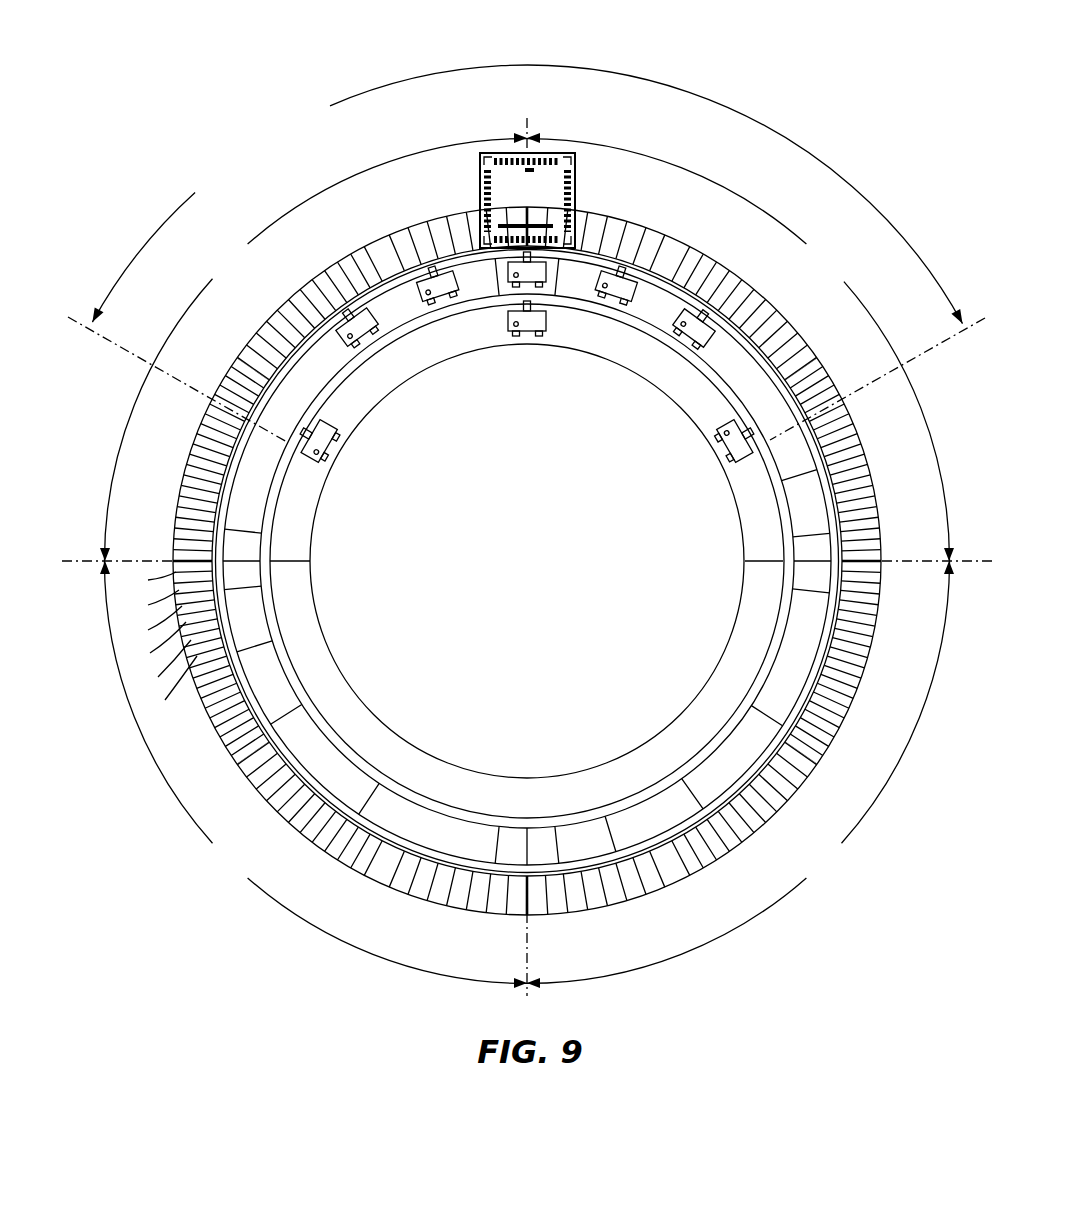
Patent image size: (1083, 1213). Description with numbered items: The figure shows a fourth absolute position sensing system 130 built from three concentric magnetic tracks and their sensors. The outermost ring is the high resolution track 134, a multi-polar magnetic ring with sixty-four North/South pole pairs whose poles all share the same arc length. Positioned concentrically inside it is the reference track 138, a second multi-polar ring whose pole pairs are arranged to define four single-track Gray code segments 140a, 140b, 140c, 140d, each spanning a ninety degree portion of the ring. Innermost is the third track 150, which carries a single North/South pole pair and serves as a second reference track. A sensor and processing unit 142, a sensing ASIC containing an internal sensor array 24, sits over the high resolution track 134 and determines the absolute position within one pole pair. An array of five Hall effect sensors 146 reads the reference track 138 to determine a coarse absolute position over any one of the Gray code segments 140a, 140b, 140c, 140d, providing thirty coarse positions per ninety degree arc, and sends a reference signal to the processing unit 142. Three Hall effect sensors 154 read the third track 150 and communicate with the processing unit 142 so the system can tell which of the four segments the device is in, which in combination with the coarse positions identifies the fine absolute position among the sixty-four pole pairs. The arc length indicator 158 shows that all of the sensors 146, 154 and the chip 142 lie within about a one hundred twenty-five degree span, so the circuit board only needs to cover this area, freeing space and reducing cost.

The fourth absolute position sensing system 130 is at (527, 510).
The arc length indicator 158 is at (252, 103).
The sensor and processing unit 142 is at (519, 200).
The internal sensor array 24 is at (547, 224).
The single-track Gray code segment 140a is at (217, 873).
The single-track Gray code segment 140b is at (838, 873).
The single-track Gray code segment 140c is at (848, 250).
The single-track Gray code segment 140d is at (237, 277).
The array of Hall effect sensors 146 is at (365, 322).
The array of Hall effect sensors 154 is at (530, 324).
The third track 150 is at (362, 697).
The reference track 138 is at (408, 842).
The high resolution track 134 is at (623, 903).